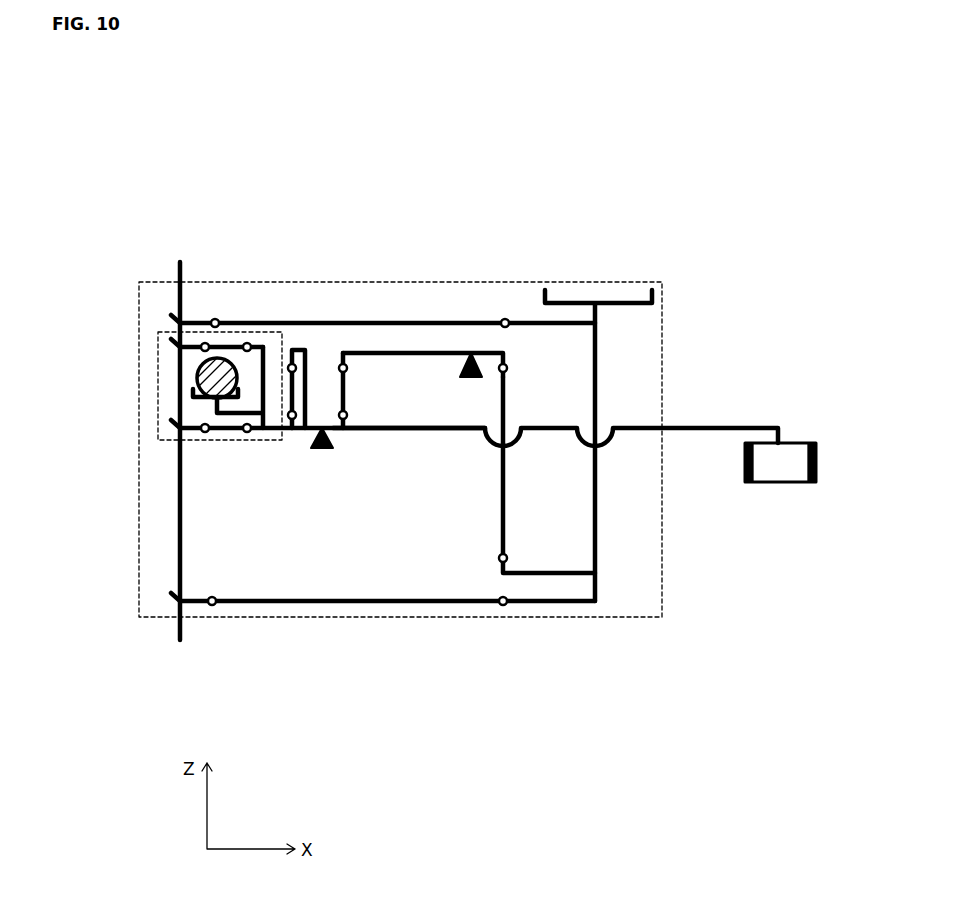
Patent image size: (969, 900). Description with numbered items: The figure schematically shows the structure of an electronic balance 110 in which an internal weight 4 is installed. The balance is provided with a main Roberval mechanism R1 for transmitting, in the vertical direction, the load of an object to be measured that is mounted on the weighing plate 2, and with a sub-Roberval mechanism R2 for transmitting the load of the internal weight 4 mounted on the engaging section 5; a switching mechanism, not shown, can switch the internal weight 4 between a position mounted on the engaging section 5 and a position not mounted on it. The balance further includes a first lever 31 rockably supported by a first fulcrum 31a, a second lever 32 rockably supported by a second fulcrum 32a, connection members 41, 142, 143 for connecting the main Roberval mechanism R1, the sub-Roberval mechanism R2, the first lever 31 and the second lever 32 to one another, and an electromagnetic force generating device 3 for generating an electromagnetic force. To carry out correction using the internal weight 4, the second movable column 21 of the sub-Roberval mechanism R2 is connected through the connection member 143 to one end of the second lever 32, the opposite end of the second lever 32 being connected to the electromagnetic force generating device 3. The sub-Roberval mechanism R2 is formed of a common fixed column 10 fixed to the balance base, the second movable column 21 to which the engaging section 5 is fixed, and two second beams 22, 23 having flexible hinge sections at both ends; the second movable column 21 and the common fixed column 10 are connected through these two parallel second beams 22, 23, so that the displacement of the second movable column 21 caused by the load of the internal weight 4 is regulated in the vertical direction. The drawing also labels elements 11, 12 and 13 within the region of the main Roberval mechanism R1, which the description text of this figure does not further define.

The electronic balance 110 is at (461, 84).
The common fixed column 10 is at (178, 522).
The first wiring line 13 is at (530, 323).
The weighing plate 2 is at (627, 302).
The second beam 23 is at (230, 345).
The second movable column 21 is at (273, 352).
The internal weight 4 is at (200, 380).
The engaging section 5 is at (200, 397).
The second beam 22 is at (215, 437).
The main wiring line 11 is at (597, 450).
The connection member 143 is at (312, 355).
The second fulcrum 32a is at (322, 450).
The second lever 32 is at (395, 430).
The connection member 142 is at (362, 367).
The first lever 31 is at (420, 352).
The first fulcrum 31a is at (473, 347).
The connection member 41 is at (505, 498).
The second wiring line 12 is at (468, 601).
The electromagnetic force generating device 3 is at (800, 465).
The main Roberval mechanism R1 is at (572, 617).
The sub-Roberval mechanism R2 is at (157, 378).